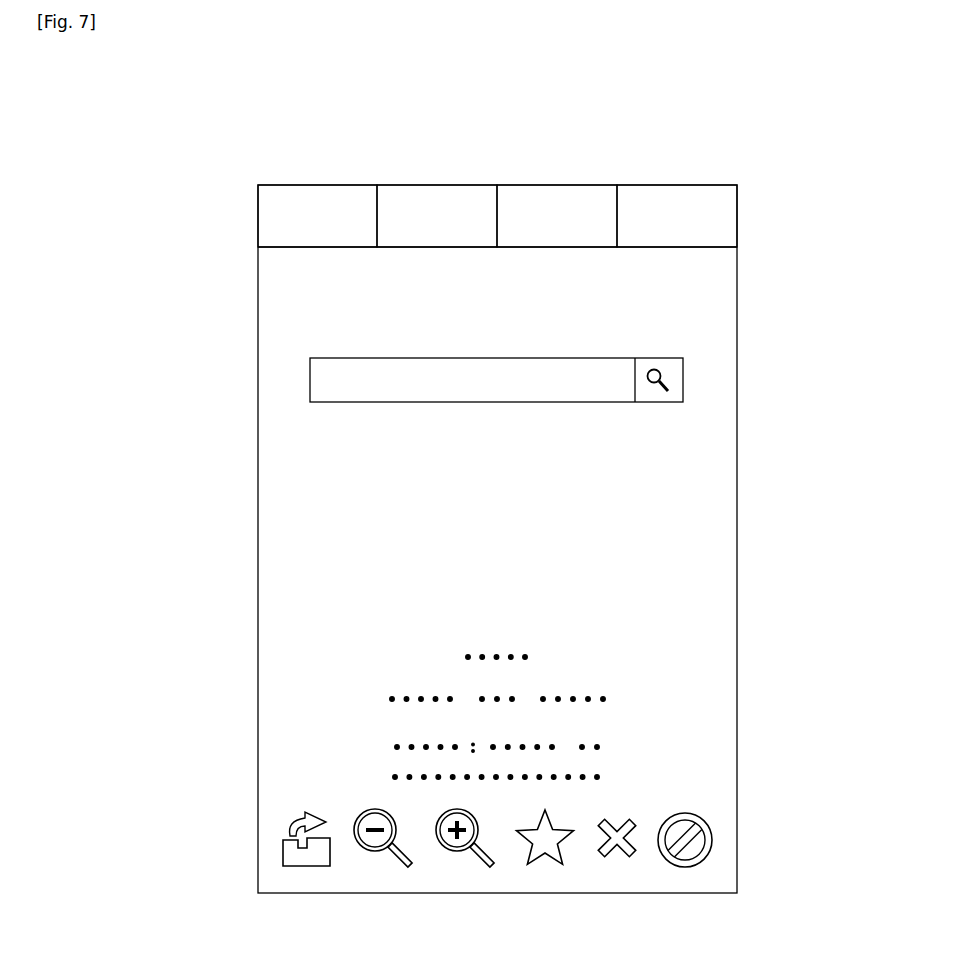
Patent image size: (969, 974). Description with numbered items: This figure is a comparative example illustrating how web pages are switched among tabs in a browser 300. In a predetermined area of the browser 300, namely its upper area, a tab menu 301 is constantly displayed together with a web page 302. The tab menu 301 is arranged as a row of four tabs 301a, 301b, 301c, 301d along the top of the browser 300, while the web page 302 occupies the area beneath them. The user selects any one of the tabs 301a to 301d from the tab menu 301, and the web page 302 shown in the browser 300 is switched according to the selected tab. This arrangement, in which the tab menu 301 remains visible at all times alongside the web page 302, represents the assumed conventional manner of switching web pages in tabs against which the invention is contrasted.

The browser 300 is at (760, 447).
The tab menu 301 is at (740, 127).
The tab 301a is at (307, 207).
The tab 301b is at (425, 207).
The tab 301c is at (545, 207).
The tab 301d is at (665, 207).
The web page 302 is at (710, 313).